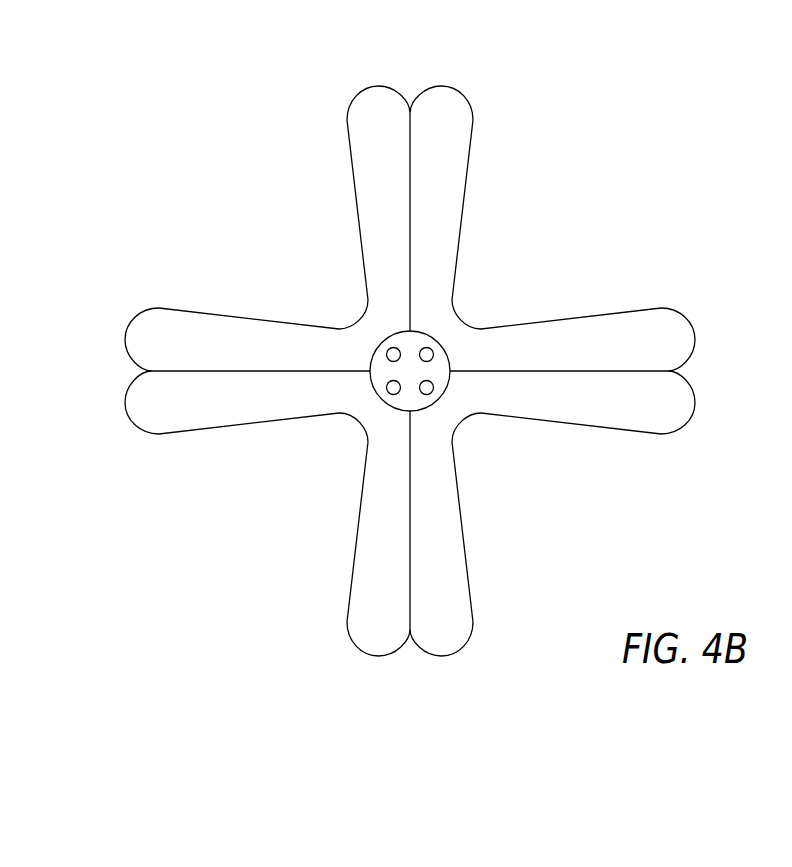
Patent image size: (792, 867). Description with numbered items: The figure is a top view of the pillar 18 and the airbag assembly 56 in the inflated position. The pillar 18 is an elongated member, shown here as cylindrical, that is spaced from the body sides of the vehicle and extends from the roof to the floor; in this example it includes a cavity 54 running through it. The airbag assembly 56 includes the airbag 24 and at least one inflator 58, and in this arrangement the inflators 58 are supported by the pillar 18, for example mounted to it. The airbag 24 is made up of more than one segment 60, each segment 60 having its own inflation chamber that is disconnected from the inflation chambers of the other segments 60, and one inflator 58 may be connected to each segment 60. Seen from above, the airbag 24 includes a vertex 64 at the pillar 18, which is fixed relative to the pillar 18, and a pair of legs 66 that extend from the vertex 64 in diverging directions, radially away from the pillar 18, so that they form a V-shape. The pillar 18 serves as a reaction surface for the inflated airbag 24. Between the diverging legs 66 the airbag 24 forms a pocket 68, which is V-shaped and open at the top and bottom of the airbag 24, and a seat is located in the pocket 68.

The pillar 18 is at (427, 342).
The airbag 24 is at (468, 162).
The cavity 54 is at (433, 363).
The airbag assembly 56 is at (608, 172).
The inflator 58 is at (419, 352).
The segment 60 is at (380, 85).
The vertex 64 is at (410, 372).
The legs 66 is at (355, 93).
The pocket 68 is at (229, 251).